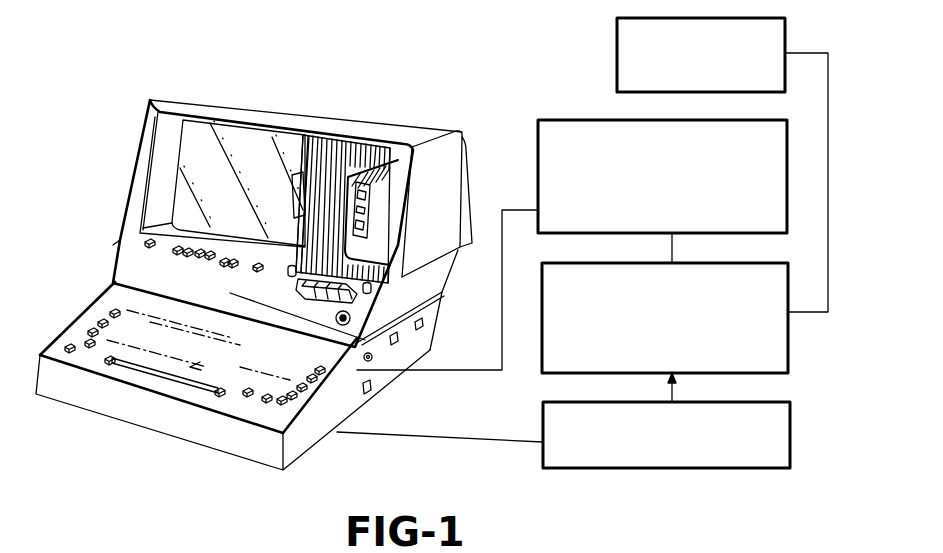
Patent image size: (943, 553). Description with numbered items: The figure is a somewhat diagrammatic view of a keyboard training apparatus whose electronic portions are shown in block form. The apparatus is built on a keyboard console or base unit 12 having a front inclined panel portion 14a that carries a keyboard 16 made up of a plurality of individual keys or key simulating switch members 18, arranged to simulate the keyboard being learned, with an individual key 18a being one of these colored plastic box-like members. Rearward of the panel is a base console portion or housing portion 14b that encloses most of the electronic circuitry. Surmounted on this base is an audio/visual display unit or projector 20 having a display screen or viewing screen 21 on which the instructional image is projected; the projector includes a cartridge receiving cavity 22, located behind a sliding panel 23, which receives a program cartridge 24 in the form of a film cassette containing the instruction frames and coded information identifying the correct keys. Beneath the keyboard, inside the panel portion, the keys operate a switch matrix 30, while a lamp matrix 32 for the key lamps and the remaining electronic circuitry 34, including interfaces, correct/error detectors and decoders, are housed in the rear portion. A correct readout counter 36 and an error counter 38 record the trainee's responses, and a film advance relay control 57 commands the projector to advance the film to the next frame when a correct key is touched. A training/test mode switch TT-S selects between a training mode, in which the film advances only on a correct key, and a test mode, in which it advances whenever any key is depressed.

The keyboard console or base unit 12 is at (345, 408).
The front inclined panel portion 14a is at (60, 363).
The base console portion or housing portion 14b is at (430, 338).
The keyboard 16 is at (153, 377).
The keys or key simulating switch members 18 is at (245, 397).
The function key 18a is at (263, 402).
The audio/visual display unit or projector 20 is at (450, 173).
The display screen or viewing screen 21 is at (245, 148).
The cartridge receiving cavity 22 is at (377, 193).
The sliding panel 23 is at (330, 155).
The program cartridge 24 is at (372, 207).
The switch matrix 30 is at (790, 432).
The lamp matrix 32 is at (587, 118).
The electronic circuitry 34 is at (788, 352).
The correct readout counter 36 is at (393, 343).
The error counter 38 is at (425, 323).
The film advance relay control 57 is at (775, 18).
The training/test mode switch TT-S is at (370, 390).